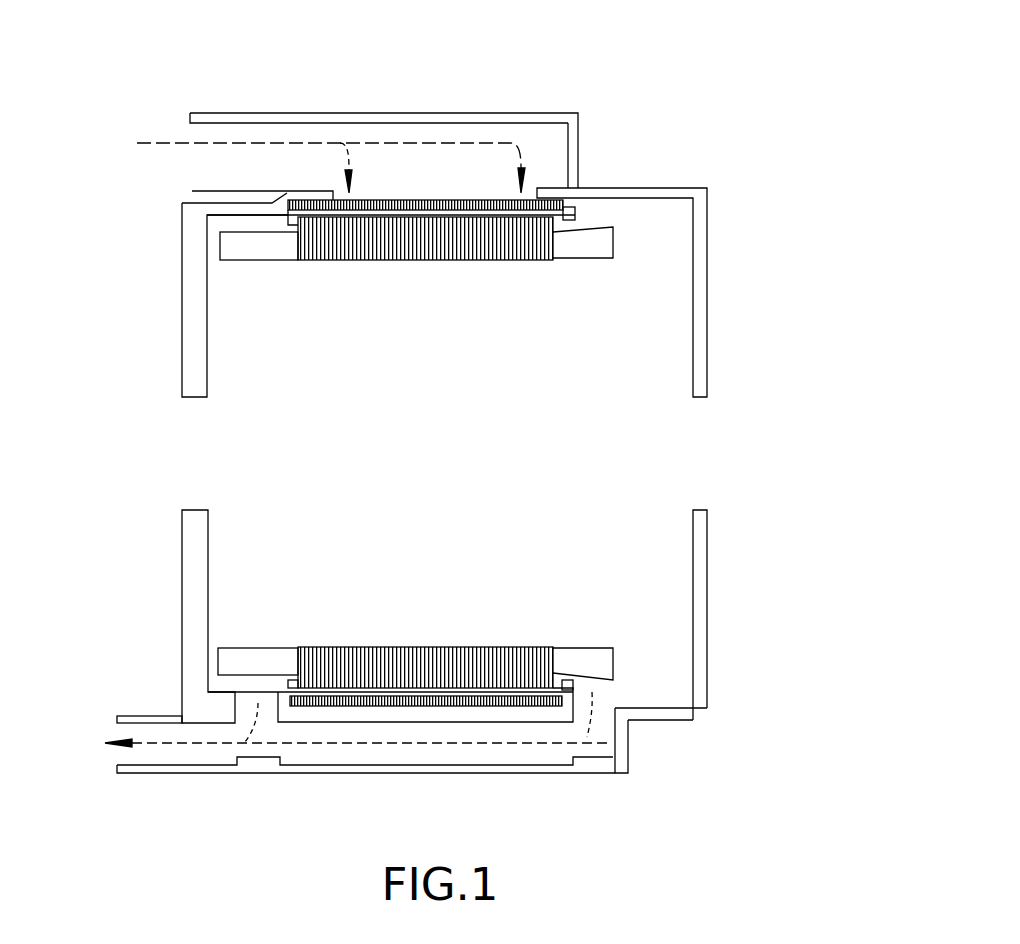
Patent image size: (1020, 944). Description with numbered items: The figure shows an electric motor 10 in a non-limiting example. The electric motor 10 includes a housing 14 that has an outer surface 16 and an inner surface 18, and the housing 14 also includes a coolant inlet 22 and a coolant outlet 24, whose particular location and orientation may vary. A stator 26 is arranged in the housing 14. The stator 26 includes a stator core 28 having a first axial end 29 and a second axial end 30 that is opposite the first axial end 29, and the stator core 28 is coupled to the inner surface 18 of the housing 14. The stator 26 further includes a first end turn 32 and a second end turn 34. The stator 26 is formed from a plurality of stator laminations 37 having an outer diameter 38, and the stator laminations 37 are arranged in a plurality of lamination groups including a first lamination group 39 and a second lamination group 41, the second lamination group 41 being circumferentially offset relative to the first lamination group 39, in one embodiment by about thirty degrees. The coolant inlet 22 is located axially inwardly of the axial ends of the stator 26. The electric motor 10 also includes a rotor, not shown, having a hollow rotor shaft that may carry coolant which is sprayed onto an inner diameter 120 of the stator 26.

The electric motor 10 is at (780, 683).
The housing 14 is at (720, 712).
The outer surface 16 is at (603, 190).
The inner surface 18 is at (633, 199).
The coolant inlet 22 is at (216, 128).
The coolant outlet 24 is at (135, 768).
The stator 26 is at (336, 608).
The stator core 28 is at (473, 670).
The first axial end 29 is at (297, 660).
The second axial end 30 is at (556, 668).
The first end turn 32 is at (603, 667).
The second end turn 34 is at (232, 658).
The stator laminations 37 is at (383, 647).
The outer diameter 38 is at (440, 197).
The first lamination group 39 is at (543, 647).
The second lamination group 41 is at (533, 647).
The inner diameter 120 is at (478, 259).